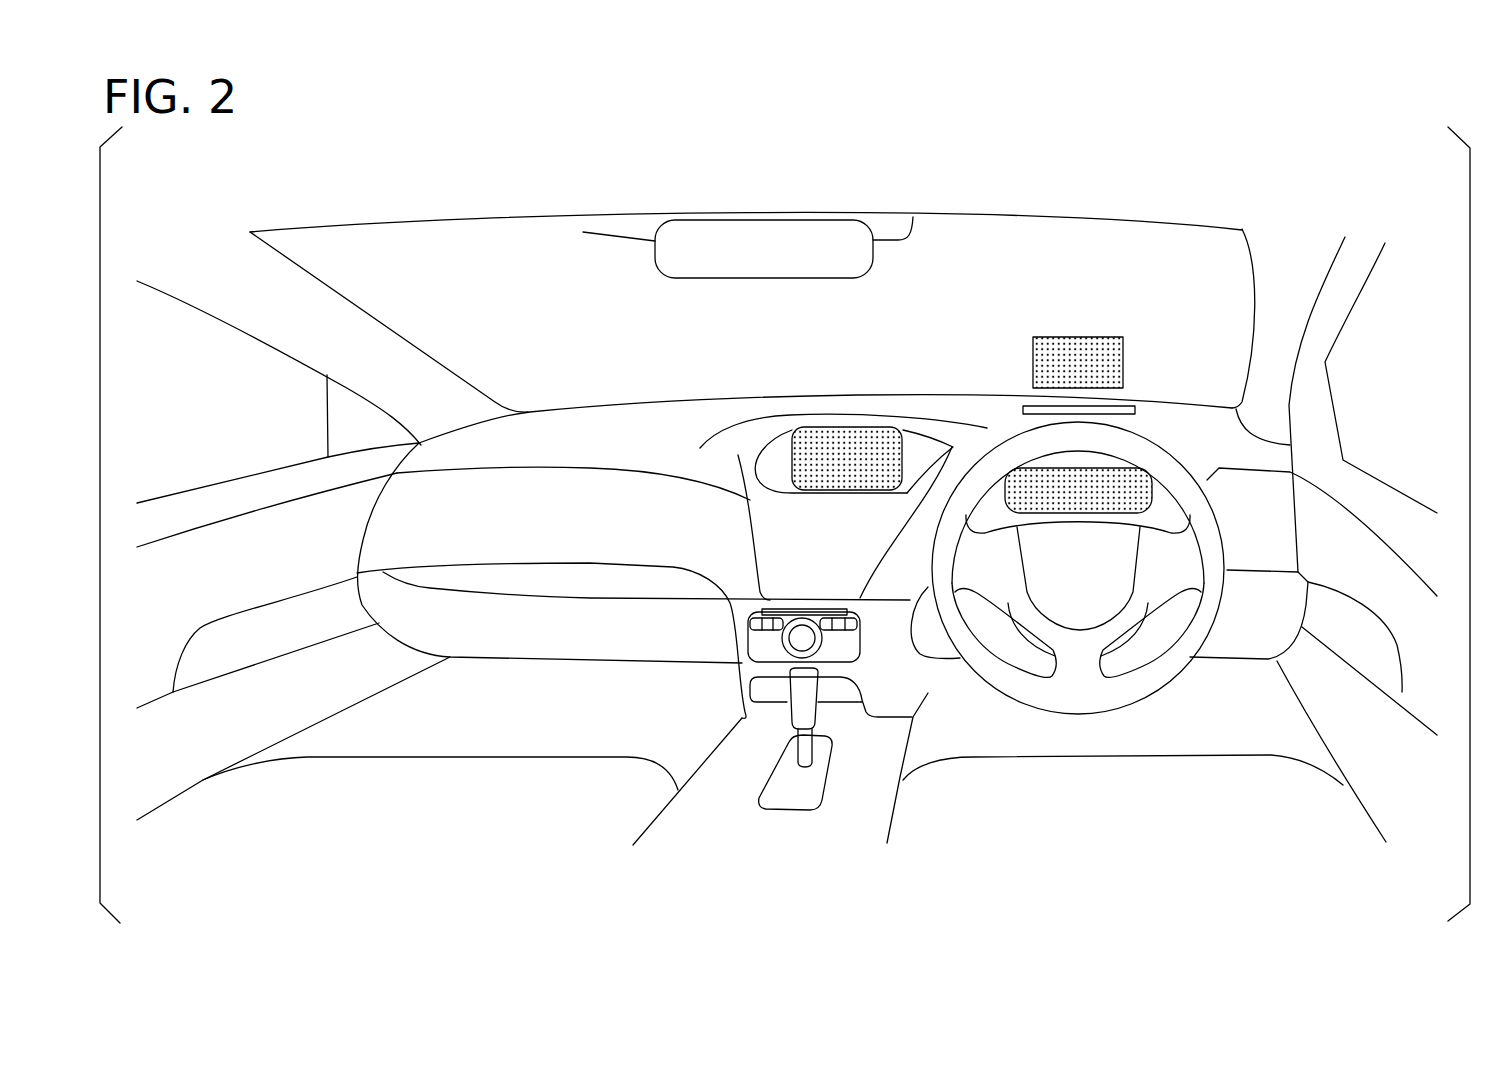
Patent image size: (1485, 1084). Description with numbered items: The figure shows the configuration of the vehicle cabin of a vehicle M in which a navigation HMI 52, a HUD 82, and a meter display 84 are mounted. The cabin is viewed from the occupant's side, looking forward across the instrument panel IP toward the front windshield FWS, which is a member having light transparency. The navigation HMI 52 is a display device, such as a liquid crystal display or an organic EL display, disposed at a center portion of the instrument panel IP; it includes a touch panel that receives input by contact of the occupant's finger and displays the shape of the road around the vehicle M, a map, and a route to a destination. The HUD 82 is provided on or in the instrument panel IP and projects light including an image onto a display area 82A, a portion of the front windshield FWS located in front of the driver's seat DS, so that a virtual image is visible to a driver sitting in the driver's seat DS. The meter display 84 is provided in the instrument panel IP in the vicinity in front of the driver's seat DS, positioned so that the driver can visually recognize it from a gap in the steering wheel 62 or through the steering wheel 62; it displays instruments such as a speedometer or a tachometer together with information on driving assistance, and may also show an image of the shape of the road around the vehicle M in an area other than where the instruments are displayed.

The front windshield FWS is at (557, 262).
The instrument panel IP is at (623, 430).
The vehicle M is at (1336, 199).
The navigation HMI 52 is at (845, 427).
The HUD 82 is at (1140, 408).
The display area 82A is at (1078, 337).
The meter display 84 is at (1030, 465).
The steering wheel 62 is at (1078, 540).
The driver's seat DS is at (1140, 823).